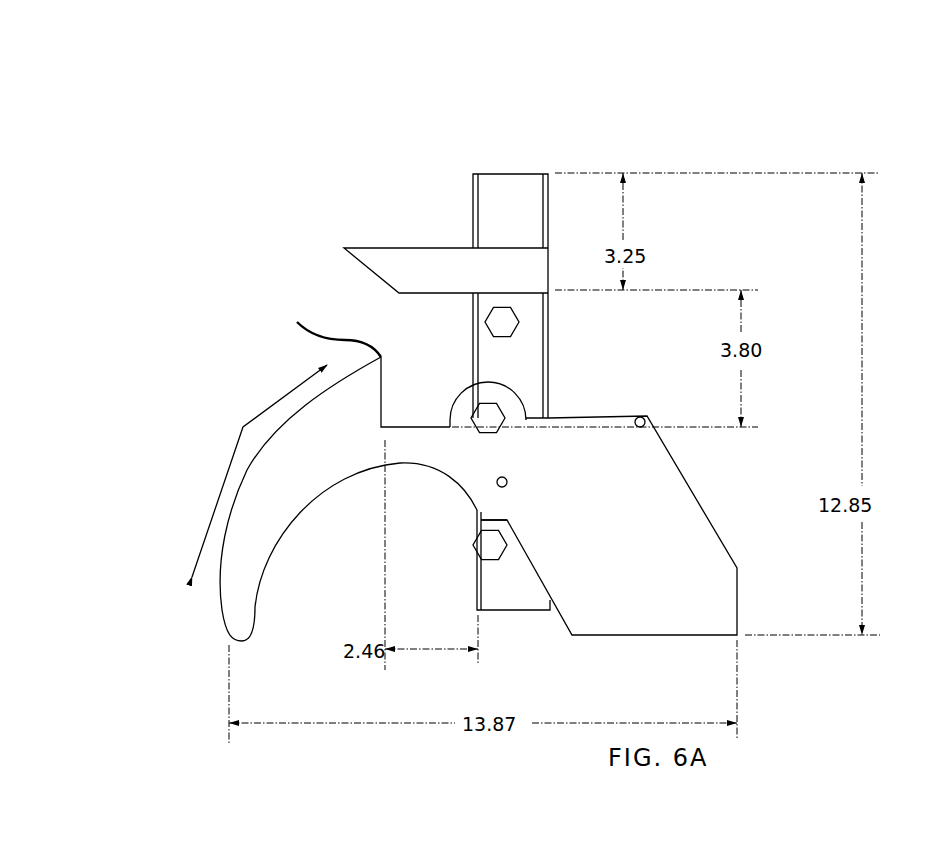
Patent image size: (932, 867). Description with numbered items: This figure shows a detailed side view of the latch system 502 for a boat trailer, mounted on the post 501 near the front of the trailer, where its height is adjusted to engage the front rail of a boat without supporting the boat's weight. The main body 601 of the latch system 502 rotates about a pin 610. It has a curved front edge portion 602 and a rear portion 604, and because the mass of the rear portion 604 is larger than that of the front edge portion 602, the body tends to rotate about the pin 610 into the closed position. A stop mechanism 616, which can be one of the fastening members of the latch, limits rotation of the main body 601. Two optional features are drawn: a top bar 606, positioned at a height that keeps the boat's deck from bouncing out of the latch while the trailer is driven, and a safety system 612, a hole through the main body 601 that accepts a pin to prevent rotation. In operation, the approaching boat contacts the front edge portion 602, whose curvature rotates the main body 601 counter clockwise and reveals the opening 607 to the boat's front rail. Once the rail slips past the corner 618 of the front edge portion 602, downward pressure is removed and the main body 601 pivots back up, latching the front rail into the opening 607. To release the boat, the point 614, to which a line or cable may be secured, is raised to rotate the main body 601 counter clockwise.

The latch system 502 is at (425, 148).
The post 501 is at (513, 183).
The top bar 606 is at (395, 258).
The corner 618 is at (335, 330).
The opening 607 is at (415, 392).
The pin 610 is at (498, 410).
The rear portion 604 is at (685, 568).
The point 614 is at (648, 422).
The safety system 612 is at (508, 482).
The stop mechanism 616 is at (490, 548).
The front edge portion 602 is at (250, 465).
The main body 601 is at (386, 506).